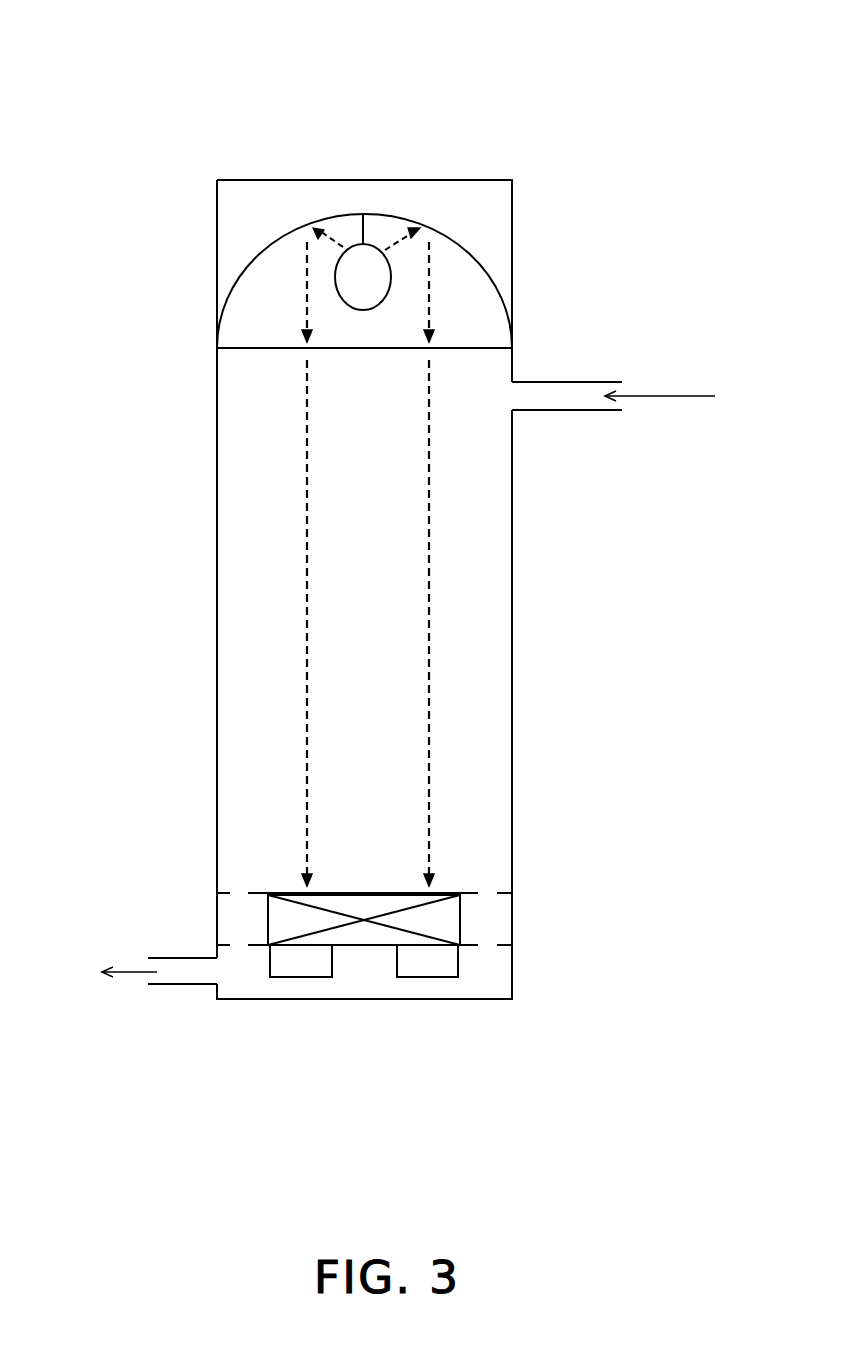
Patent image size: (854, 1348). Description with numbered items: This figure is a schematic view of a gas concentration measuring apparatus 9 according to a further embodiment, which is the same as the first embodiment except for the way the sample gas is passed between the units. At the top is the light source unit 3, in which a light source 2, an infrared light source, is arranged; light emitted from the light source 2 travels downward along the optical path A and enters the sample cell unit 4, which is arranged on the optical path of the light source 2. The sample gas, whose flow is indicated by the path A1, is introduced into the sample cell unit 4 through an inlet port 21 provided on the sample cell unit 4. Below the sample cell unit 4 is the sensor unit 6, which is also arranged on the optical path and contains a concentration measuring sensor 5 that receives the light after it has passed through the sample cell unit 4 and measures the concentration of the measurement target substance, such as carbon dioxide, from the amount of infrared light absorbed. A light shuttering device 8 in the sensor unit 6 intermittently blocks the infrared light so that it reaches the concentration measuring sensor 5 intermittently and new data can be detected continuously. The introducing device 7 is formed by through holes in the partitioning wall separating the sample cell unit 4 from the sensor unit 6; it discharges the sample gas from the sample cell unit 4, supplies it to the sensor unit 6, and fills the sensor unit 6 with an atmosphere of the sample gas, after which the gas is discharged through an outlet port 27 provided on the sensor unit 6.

The light source 2 is at (373, 270).
The light source unit 3 is at (257, 180).
The sample cell unit 4 is at (215, 447).
The concentration measuring sensor 5 is at (305, 978).
The sensor unit 6 is at (215, 945).
The introducing device 7 is at (228, 882).
The light shuttering device 8 is at (363, 945).
The gas concentration measuring apparatus 9 is at (558, 207).
The inlet port 21 is at (567, 382).
The outlet port 27 is at (172, 958).
The optical path A is at (307, 642).
The path of the sample gas A1 is at (657, 396).